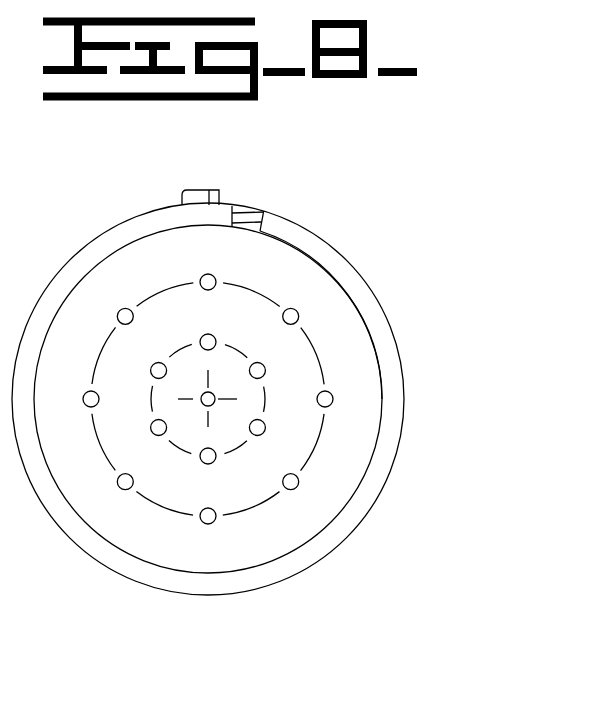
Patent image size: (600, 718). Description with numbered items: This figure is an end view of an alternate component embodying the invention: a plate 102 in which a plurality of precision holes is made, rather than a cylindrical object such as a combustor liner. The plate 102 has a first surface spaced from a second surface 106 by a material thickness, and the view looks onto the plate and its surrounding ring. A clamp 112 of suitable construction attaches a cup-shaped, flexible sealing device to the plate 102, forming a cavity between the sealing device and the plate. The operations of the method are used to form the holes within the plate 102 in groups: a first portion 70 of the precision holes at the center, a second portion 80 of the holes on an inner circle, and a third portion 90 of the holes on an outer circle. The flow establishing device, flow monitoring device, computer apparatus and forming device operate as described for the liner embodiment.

The first portion 70 is at (213, 404).
The second portion 80 is at (266, 368).
The third portion 90 is at (291, 308).
The plate 102 is at (313, 502).
The second surface 106 is at (353, 341).
The clamp 112 is at (203, 596).